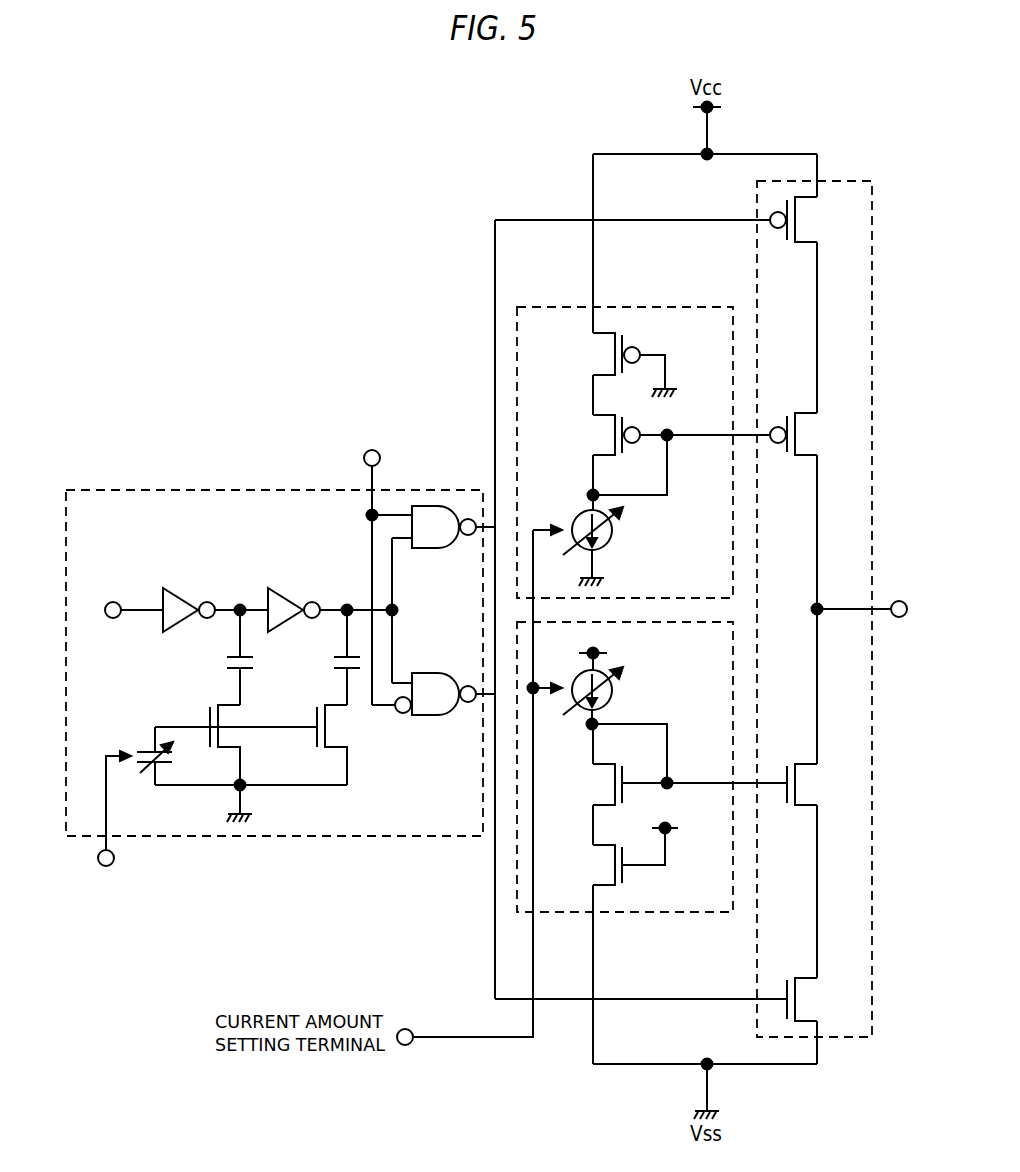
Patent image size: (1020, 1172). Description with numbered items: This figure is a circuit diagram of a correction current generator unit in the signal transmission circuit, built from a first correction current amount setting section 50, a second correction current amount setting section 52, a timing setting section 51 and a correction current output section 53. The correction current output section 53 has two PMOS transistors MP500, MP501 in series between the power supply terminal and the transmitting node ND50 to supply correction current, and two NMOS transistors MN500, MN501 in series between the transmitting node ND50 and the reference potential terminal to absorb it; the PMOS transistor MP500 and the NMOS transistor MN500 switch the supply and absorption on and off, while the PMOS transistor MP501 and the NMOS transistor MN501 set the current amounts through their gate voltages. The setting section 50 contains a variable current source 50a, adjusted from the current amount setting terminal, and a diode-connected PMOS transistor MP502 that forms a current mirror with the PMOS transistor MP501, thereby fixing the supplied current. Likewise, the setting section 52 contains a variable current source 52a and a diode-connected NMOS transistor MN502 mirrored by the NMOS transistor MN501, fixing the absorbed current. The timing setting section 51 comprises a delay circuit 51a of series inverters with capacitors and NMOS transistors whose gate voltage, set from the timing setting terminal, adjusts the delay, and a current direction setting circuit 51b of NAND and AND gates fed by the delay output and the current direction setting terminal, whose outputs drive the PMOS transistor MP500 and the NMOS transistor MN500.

The correction current amount setting section 50 is at (590, 452).
The variable current source 50a is at (612, 528).
The timing setting section 51 is at (261, 649).
The delay circuit 51a is at (303, 800).
The current direction setting circuit 51b is at (430, 726).
The correction current amount setting section 52 is at (589, 843).
The variable current source 52a is at (612, 688).
The correction current output section 53 is at (814, 649).
The PMOS transistor MP500 is at (815, 219).
The PMOS transistor MP501 is at (815, 434).
The diode-connected PMOS transistor MP502 is at (594, 435).
The NMOS transistor MN500 is at (824, 999).
The NMOS transistor MN501 is at (823, 784).
The diode-connected NMOS transistor MN502 is at (585, 784).
The transmitting node ND50 is at (871, 625).